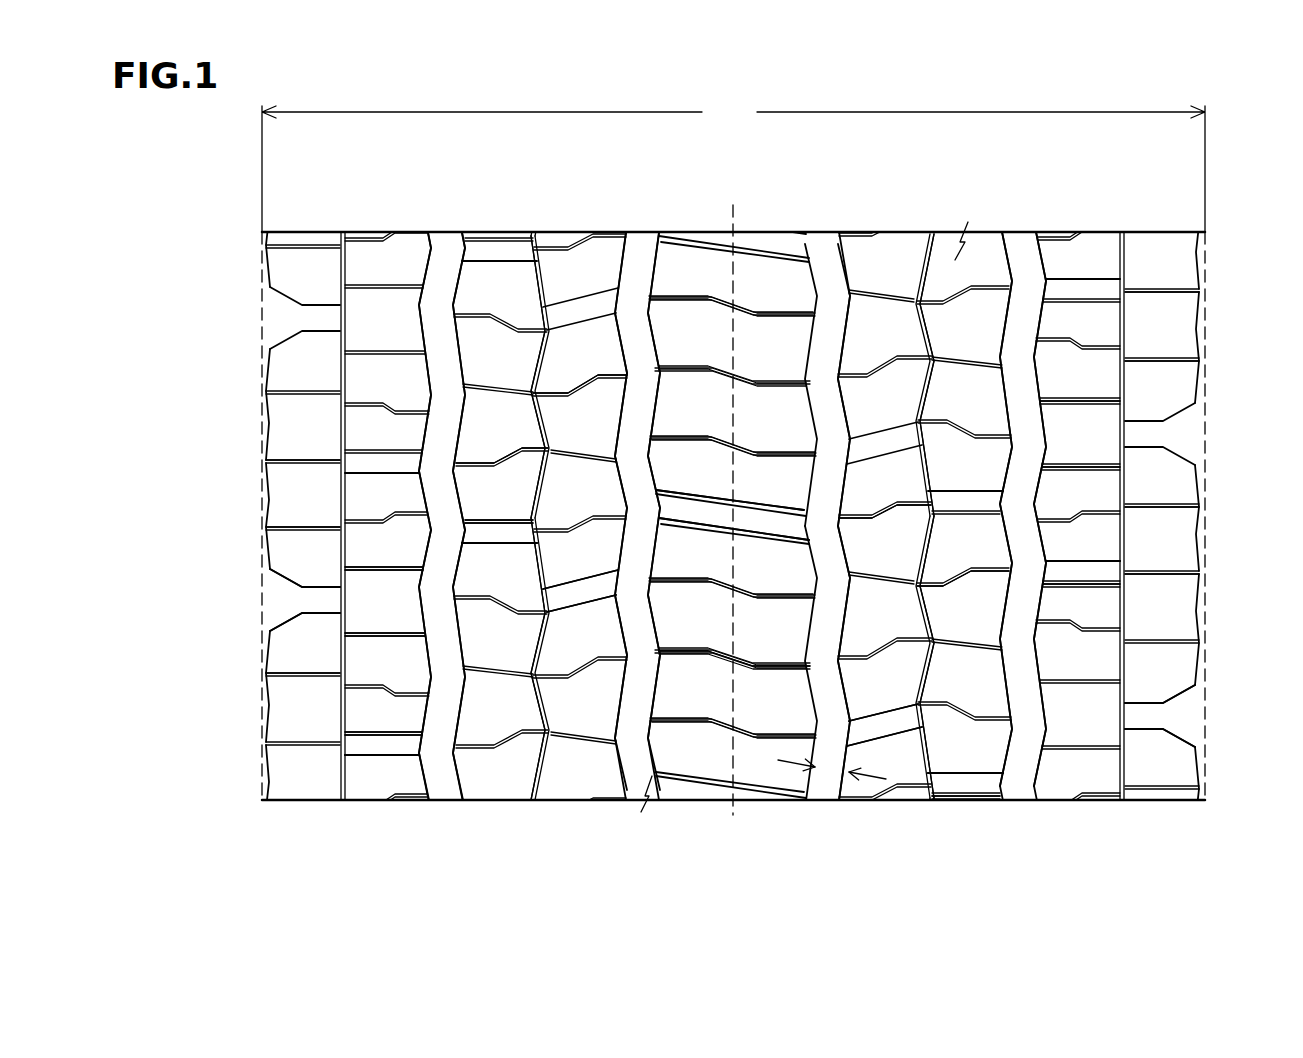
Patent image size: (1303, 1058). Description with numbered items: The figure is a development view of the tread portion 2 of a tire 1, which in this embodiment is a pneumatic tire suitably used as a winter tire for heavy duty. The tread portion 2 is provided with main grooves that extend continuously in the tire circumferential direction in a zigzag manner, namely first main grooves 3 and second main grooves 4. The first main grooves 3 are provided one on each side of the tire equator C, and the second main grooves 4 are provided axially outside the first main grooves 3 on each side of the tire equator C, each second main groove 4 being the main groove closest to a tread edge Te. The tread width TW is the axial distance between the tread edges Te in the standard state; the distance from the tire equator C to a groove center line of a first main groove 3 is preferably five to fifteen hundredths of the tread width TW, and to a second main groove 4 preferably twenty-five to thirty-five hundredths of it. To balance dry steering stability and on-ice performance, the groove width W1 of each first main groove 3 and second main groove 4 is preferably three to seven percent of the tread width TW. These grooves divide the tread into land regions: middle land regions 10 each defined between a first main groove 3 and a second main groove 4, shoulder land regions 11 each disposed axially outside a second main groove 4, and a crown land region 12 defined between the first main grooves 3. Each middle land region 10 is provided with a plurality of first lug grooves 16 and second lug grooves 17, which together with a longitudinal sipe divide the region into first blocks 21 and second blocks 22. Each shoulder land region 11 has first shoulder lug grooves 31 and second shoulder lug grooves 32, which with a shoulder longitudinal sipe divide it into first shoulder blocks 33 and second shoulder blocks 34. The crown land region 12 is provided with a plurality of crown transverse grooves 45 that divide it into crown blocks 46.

The tire 1 is at (704, 228).
The tread portion 2 is at (789, 228).
The first main grooves 3 is at (636, 283).
The second main grooves 4 is at (446, 283).
The middle land regions 10 is at (490, 288).
The shoulder land regions 11 is at (310, 274).
The crown land region 12 is at (770, 286).
The first lug grooves 16 is at (584, 592).
The second lug grooves 17 is at (496, 538).
The first blocks 21 is at (582, 490).
The second blocks 22 is at (502, 433).
The first shoulder lug grooves 31 is at (385, 742).
The second shoulder lug grooves 32 is at (302, 603).
The first shoulder blocks 33 is at (386, 325).
The second shoulder blocks 34 is at (307, 377).
The crown transverse grooves 45 is at (763, 520).
The crown blocks 46 is at (716, 682).
The tread width TW is at (733, 164).
The tread edges Te is at (262, 256).
The tire equator C is at (733, 496).
The groove width W1 is at (832, 813).